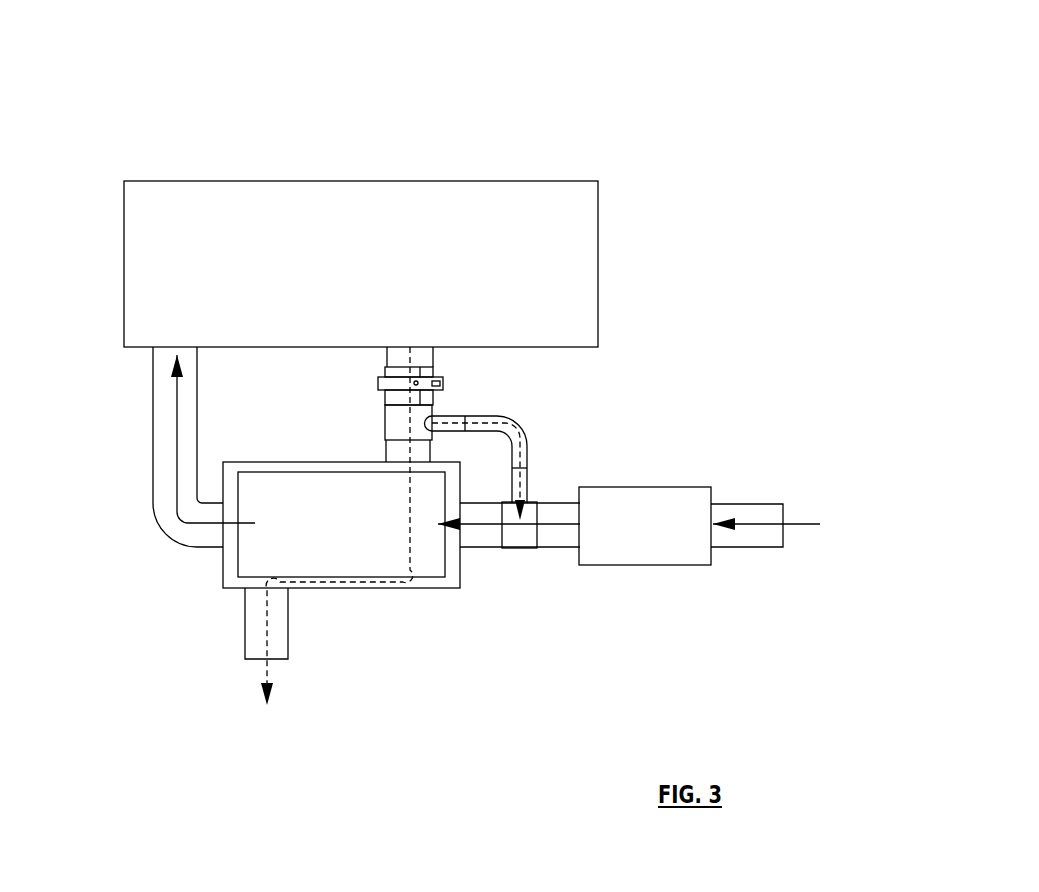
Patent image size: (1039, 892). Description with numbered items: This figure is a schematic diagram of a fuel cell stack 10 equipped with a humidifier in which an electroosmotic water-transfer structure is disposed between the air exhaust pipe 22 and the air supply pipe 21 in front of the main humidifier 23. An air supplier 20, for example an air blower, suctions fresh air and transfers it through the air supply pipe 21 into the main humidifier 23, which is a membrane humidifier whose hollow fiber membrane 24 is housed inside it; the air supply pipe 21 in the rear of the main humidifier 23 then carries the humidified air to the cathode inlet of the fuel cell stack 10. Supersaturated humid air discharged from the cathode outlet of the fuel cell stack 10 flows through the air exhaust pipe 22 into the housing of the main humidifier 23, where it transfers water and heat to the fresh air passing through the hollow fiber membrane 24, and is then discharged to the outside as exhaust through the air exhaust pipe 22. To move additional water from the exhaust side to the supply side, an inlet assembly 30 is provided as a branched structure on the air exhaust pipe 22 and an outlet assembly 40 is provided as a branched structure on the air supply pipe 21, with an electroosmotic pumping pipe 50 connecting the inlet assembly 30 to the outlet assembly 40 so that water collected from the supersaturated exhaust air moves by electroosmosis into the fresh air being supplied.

The fuel cell stack 10 is at (350, 180).
The air supplier 20 is at (657, 565).
The air supply pipe 21 is at (153, 425).
The air exhaust pipe 22 is at (387, 352).
The main humidifier 23 is at (373, 588).
The hollow fiber membrane 24 is at (432, 580).
The inlet assembly 30 is at (368, 424).
The outlet assembly 40 is at (545, 489).
The electroosmotic pumping pipe 50 is at (532, 405).